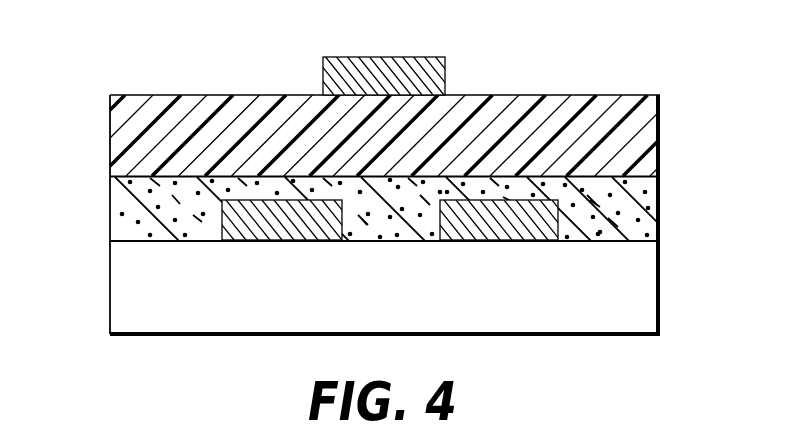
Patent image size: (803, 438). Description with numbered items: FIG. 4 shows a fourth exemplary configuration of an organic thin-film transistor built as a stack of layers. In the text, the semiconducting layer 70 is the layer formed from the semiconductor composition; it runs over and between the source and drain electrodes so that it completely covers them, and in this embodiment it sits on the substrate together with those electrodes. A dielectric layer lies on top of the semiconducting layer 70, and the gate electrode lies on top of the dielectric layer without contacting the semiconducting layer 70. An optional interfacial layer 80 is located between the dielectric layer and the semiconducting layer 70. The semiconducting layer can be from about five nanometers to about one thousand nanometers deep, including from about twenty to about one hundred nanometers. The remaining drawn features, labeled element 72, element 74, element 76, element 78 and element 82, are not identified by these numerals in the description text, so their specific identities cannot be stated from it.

The semiconducting layer 70 is at (140, 58).
The dielectric layer 72 is at (650, 219).
The multilayer stack 74 is at (101, 95).
The substrate 76 is at (650, 288).
The top electrode 78 is at (385, 76).
The interfacial layer 80 is at (284, 220).
The second buried electrode 82 is at (502, 220).